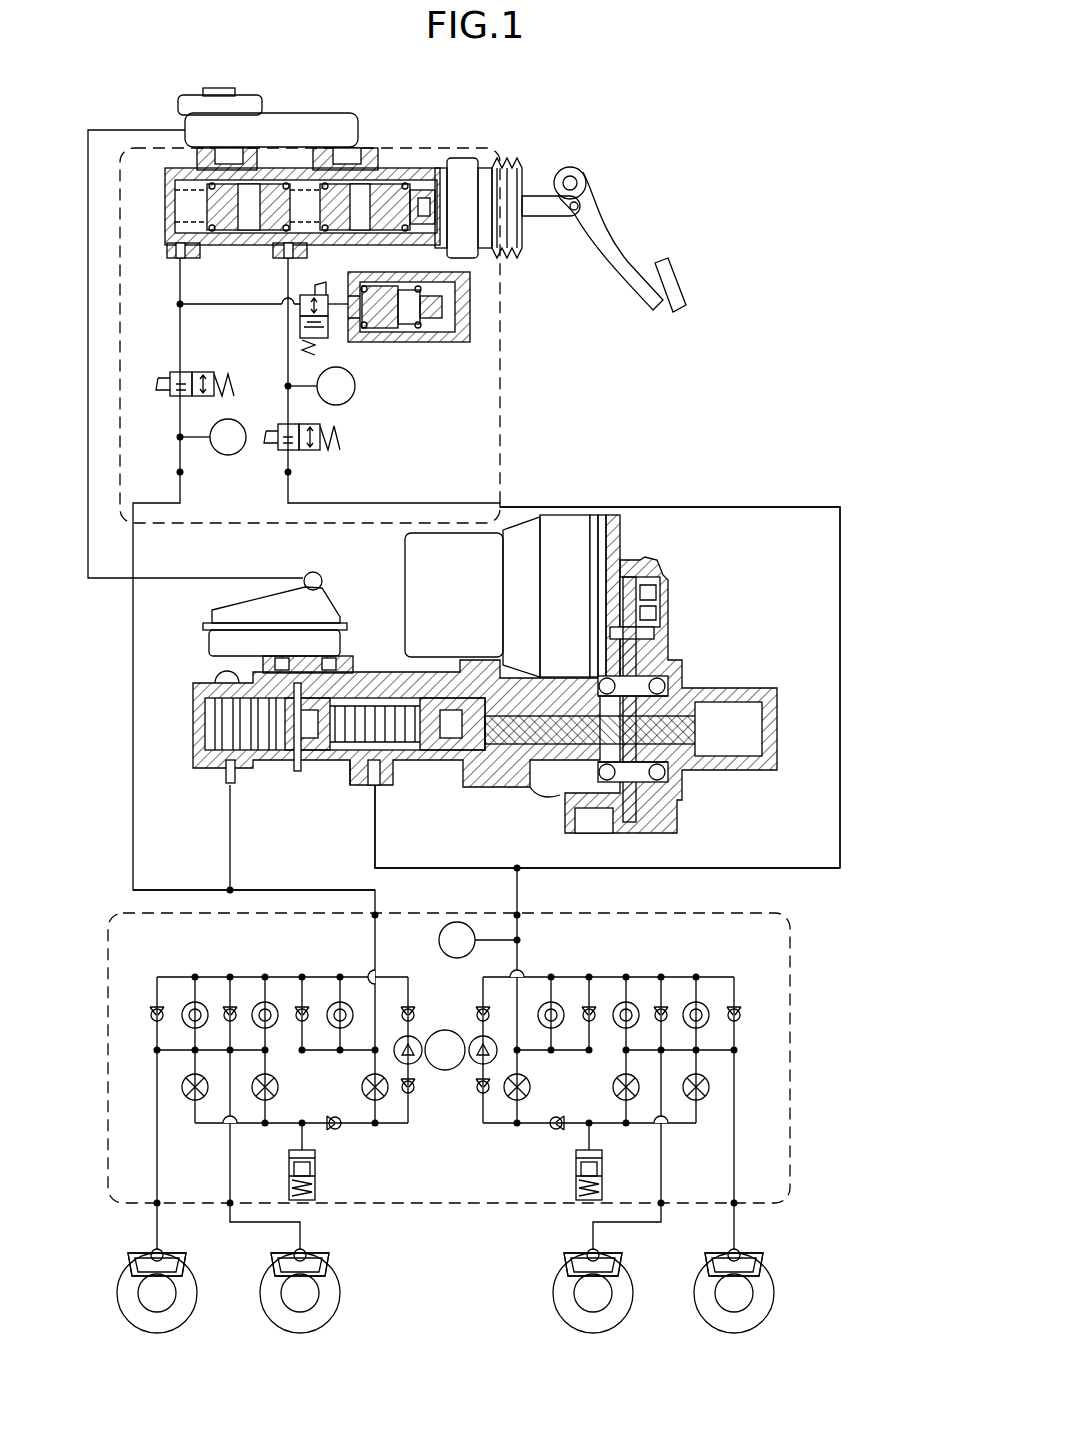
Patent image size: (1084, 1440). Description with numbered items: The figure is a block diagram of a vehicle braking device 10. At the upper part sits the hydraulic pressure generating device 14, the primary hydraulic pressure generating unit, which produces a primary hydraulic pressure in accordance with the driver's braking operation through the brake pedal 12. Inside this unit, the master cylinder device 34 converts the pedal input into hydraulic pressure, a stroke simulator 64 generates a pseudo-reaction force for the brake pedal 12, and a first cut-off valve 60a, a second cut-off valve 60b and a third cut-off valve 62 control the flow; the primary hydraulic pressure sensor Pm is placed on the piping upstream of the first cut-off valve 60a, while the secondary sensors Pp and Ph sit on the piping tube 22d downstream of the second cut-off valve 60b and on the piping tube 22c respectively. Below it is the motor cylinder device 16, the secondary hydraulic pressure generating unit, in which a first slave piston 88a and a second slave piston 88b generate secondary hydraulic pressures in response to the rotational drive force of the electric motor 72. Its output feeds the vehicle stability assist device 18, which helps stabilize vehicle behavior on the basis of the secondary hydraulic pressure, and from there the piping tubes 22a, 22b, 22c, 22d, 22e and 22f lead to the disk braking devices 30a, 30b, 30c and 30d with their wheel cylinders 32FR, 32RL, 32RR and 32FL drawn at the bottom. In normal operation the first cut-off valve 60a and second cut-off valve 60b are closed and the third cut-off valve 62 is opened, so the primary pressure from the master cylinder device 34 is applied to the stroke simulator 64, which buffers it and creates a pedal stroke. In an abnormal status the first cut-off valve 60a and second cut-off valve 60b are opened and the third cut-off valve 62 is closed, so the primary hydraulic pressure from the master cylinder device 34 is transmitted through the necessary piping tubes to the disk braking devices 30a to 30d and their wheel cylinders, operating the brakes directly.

The vehicle braking device 10 is at (605, 137).
The brake pedal 12 is at (672, 283).
The hydraulic pressure generating device 14 is at (510, 378).
The motor cylinder device 16 is at (662, 560).
The vehicle stability assist device 18 is at (680, 913).
The piping tube 22a is at (841, 600).
The piping tube 22b is at (414, 868).
The piping tube 22c is at (521, 886).
The piping tube 22d is at (133, 677).
The piping tube 22e is at (228, 845).
The piping tube 22f is at (300, 890).
The disk braking device 30a is at (766, 1317).
The disk braking device 30b is at (626, 1317).
The disk braking device 30c is at (333, 1317).
The disk braking device 30d is at (190, 1317).
The wheel cylinder 32FL is at (184, 1270).
The wheel cylinder 32FR is at (760, 1270).
The wheel cylinder 32RL is at (620, 1270).
The wheel cylinder 32RR is at (327, 1270).
The master cylinder device 34 is at (393, 164).
The first cut-off valve 60a is at (325, 428).
The second cut-off valve 60b is at (197, 370).
The third cut-off valve 62 is at (318, 298).
The stroke simulator 64 is at (468, 290).
The electric motor 72 is at (470, 602).
The first slave piston 88a is at (527, 785).
The second slave piston 88b is at (350, 770).